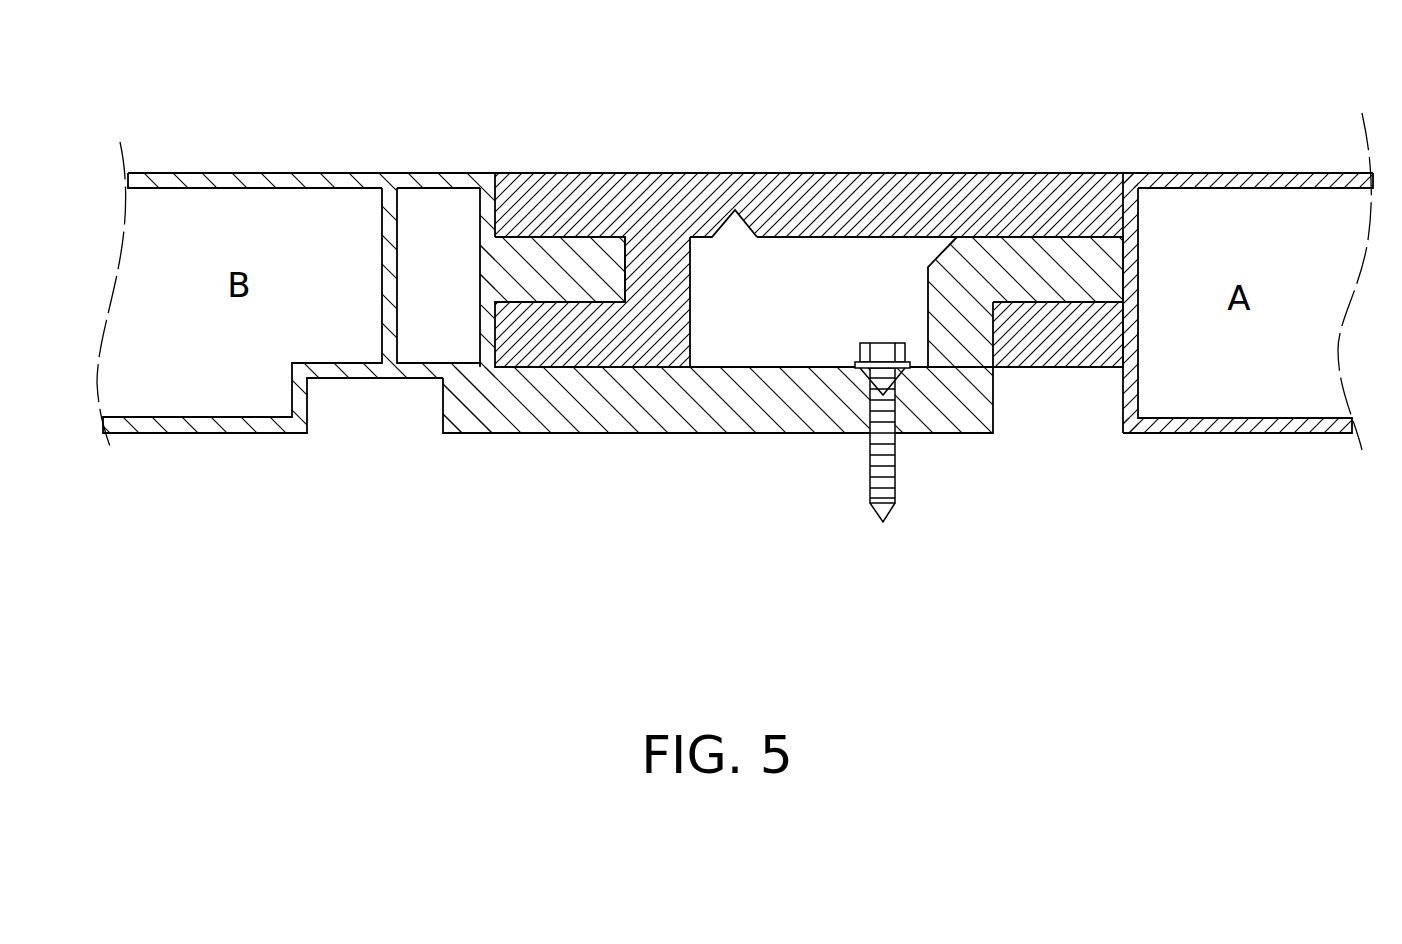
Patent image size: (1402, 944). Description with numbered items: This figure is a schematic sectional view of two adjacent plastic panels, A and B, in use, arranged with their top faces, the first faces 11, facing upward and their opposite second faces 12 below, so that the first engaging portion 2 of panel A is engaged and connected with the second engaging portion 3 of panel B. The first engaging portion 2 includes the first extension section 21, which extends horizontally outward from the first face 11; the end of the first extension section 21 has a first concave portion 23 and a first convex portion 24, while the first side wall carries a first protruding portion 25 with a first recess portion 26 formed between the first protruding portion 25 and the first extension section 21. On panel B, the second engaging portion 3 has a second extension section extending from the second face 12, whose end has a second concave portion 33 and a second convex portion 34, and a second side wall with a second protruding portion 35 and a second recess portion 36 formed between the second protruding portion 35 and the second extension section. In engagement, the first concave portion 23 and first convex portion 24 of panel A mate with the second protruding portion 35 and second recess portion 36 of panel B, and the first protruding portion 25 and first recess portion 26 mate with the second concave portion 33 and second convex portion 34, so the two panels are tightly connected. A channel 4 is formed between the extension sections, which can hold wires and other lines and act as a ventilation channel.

The first engaging portion 2 is at (805, 264).
The second engaging portion 3 is at (701, 349).
The channel 4 is at (794, 335).
The first face 11 is at (223, 173).
The second face 12 is at (213, 433).
The first extension section 21 is at (883, 178).
The first concave portion 23 is at (623, 257).
The first convex portion 24 is at (520, 347).
The first protruding portion 25 is at (1021, 357).
The first recess portion 26 is at (1117, 250).
The second concave portion 33 is at (1013, 347).
The second convex portion 34 is at (1035, 257).
The second protruding portion 35 is at (538, 262).
The second recess portion 36 is at (503, 342).